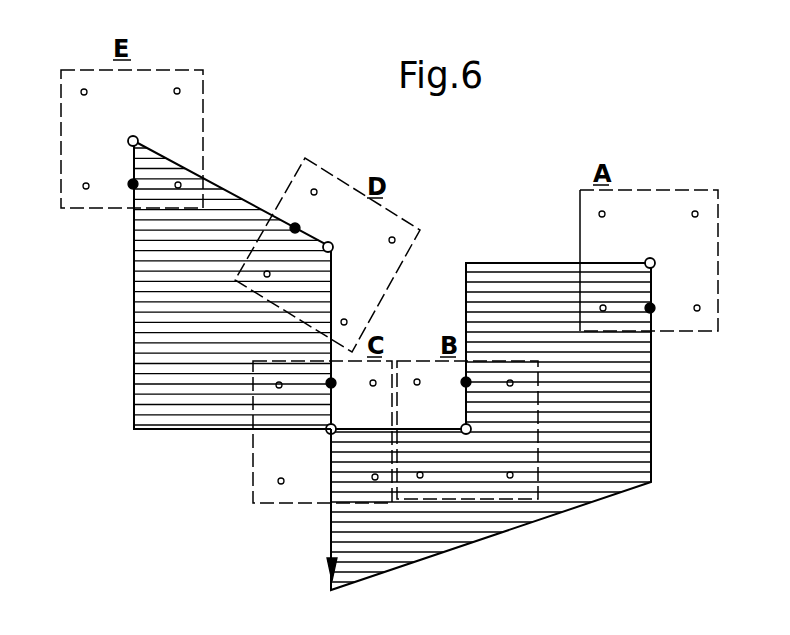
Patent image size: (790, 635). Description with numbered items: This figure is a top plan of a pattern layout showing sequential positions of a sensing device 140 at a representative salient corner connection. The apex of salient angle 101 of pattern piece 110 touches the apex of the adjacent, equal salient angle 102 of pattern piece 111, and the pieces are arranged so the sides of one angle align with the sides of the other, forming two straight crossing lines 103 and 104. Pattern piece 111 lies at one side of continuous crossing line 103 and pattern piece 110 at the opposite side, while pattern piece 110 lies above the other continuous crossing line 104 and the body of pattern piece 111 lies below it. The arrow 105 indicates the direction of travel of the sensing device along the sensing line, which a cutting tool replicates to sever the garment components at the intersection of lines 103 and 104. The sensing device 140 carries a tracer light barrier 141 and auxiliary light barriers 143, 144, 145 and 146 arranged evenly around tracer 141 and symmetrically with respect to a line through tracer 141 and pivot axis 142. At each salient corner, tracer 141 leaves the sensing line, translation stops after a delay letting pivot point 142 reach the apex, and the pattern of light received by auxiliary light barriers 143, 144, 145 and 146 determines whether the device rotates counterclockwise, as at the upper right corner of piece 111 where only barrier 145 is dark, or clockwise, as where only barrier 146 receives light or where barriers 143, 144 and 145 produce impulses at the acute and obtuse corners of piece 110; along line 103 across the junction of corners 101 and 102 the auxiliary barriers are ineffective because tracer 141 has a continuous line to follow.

The salient angle 101 is at (325, 433).
The salient angle 102 is at (333, 457).
The crossing line 103 is at (333, 308).
The crossing line 104 is at (273, 428).
The arrow 105 is at (327, 574).
The pattern piece 110 is at (142, 350).
The pattern piece 111 is at (588, 490).
The sensing device 140 is at (160, 70).
The tracer light barrier 141 is at (133, 136).
The pivot axis 142 is at (128, 184).
The auxiliary light barrier 143 is at (84, 89).
The auxiliary light barrier 144 is at (180, 91).
The auxiliary light barrier 145 is at (86, 189).
The auxiliary light barrier 146 is at (181, 185).